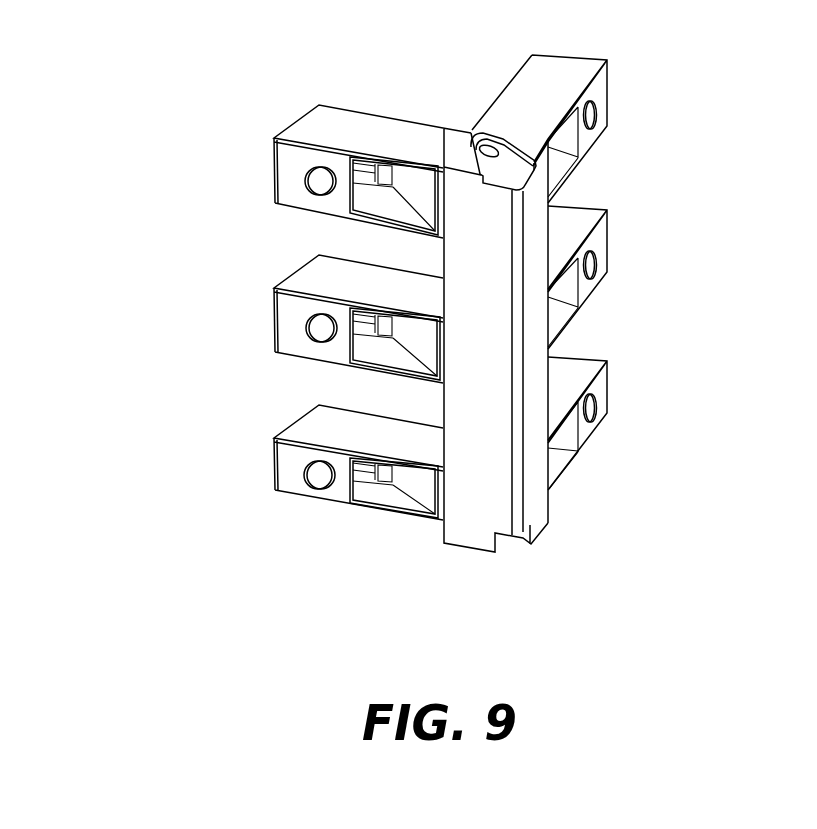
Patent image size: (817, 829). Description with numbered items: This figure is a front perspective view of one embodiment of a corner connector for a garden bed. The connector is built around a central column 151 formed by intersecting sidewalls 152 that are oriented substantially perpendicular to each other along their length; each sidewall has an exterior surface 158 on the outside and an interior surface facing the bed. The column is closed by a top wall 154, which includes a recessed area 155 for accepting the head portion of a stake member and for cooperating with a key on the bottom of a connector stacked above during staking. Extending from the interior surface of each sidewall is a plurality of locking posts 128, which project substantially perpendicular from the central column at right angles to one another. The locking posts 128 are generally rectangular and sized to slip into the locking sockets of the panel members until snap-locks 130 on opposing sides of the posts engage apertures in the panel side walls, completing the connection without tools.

The locking post 128 is at (254, 269).
The snap-lock 130 is at (322, 183).
The central column 151 is at (523, 343).
The intersecting sidewall 152 is at (591, 399).
The top wall 154 is at (568, 126).
The recessed area 155 is at (517, 173).
The exterior surface 158 is at (540, 509).